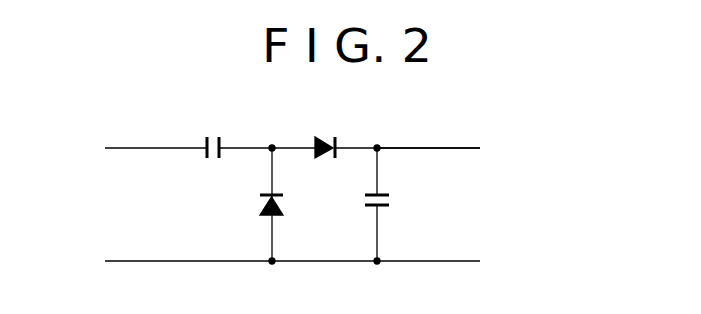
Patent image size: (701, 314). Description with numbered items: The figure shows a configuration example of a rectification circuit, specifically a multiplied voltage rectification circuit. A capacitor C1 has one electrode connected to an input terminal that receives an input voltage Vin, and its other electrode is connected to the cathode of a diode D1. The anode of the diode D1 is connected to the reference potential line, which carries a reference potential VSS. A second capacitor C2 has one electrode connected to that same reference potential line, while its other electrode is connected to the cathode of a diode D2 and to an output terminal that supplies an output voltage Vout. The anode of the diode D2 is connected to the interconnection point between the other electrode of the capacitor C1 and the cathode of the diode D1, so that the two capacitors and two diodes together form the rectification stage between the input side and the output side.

The capacitor C1 is at (210, 130).
The capacitor C2 is at (398, 204).
The diode D1 is at (252, 204).
The diode D2 is at (327, 166).
The input voltage Vin is at (130, 140).
The output voltage Vout is at (463, 150).
The reference potential VSS is at (259, 263).